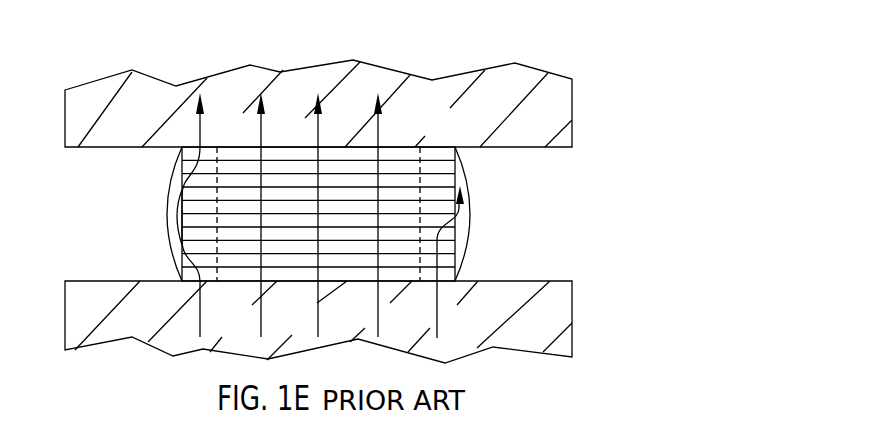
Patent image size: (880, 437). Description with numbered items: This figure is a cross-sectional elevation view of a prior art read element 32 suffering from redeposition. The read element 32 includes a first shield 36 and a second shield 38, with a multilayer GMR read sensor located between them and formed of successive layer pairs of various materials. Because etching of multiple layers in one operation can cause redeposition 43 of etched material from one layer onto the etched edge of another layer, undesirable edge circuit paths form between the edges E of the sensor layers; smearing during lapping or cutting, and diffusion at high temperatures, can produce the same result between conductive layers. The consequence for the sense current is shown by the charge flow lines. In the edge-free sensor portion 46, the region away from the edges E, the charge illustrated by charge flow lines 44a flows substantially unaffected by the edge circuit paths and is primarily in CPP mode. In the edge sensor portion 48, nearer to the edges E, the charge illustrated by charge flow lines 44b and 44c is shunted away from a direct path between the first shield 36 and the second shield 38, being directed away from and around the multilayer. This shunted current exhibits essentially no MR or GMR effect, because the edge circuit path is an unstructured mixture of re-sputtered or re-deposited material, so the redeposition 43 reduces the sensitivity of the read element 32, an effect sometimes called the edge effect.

The read element 32 is at (594, 68).
The second shield 38 is at (565, 117).
The first shield 36 is at (563, 312).
The edge-free sensor portion 46 is at (293, 180).
The edge sensor portion 48 is at (203, 153).
The redeposition 43 is at (168, 221).
The edges E is at (170, 168).
The charge flow lines 44a is at (263, 313).
The charge flow line 44b is at (203, 313).
The charge flow line 44c is at (440, 313).